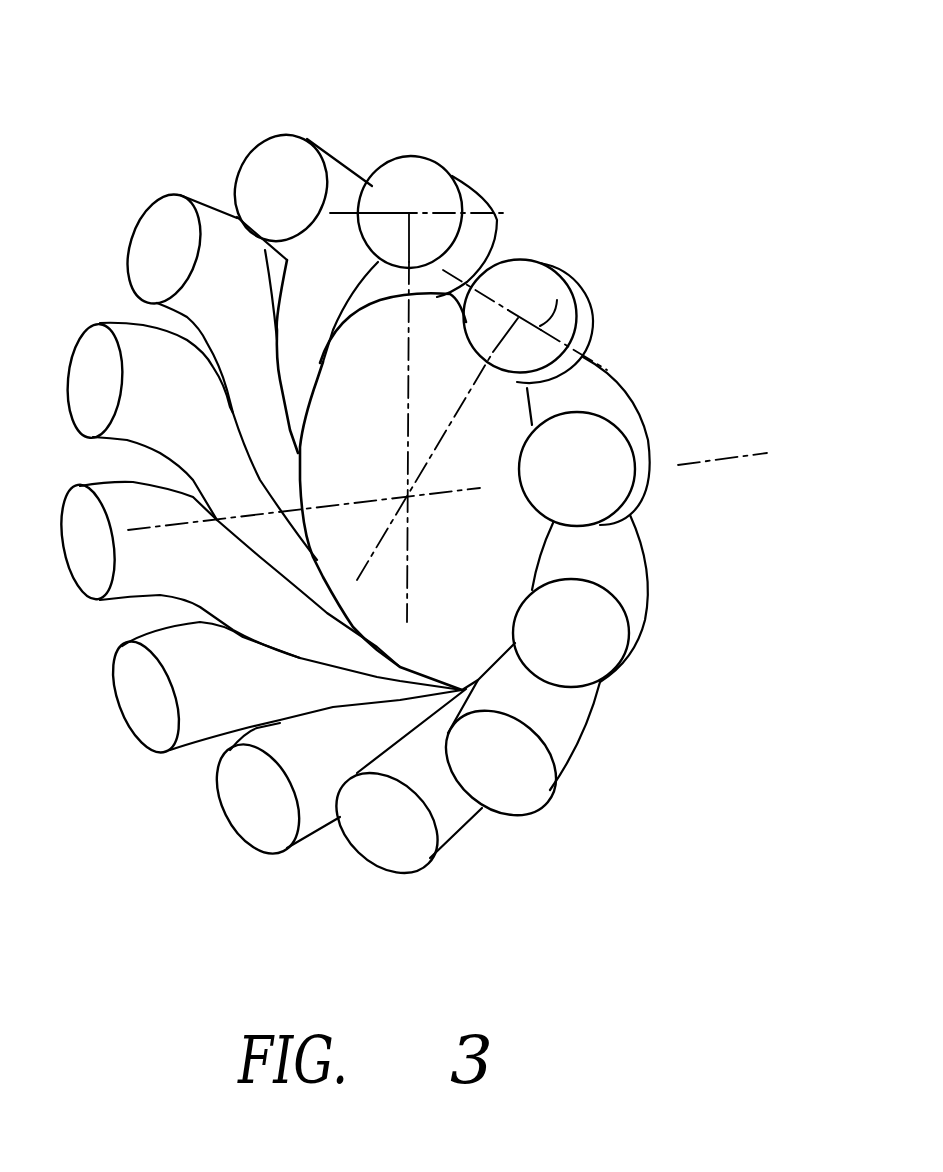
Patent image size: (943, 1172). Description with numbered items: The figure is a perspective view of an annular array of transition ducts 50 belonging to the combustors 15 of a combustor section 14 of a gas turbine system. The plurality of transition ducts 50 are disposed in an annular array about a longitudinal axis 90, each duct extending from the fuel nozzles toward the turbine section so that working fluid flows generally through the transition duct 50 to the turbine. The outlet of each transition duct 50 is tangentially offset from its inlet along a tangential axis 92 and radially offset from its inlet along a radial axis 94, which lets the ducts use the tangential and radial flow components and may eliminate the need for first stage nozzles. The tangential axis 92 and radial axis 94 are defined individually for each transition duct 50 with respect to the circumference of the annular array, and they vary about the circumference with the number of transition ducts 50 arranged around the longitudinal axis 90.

The combustor section 14 is at (585, 95).
The combustor 15 is at (199, 151).
The transition duct 50 is at (342, 150).
The longitudinal axis 90 is at (333, 507).
The tangential axis 92 is at (483, 190).
The radial axis 94 is at (412, 417).